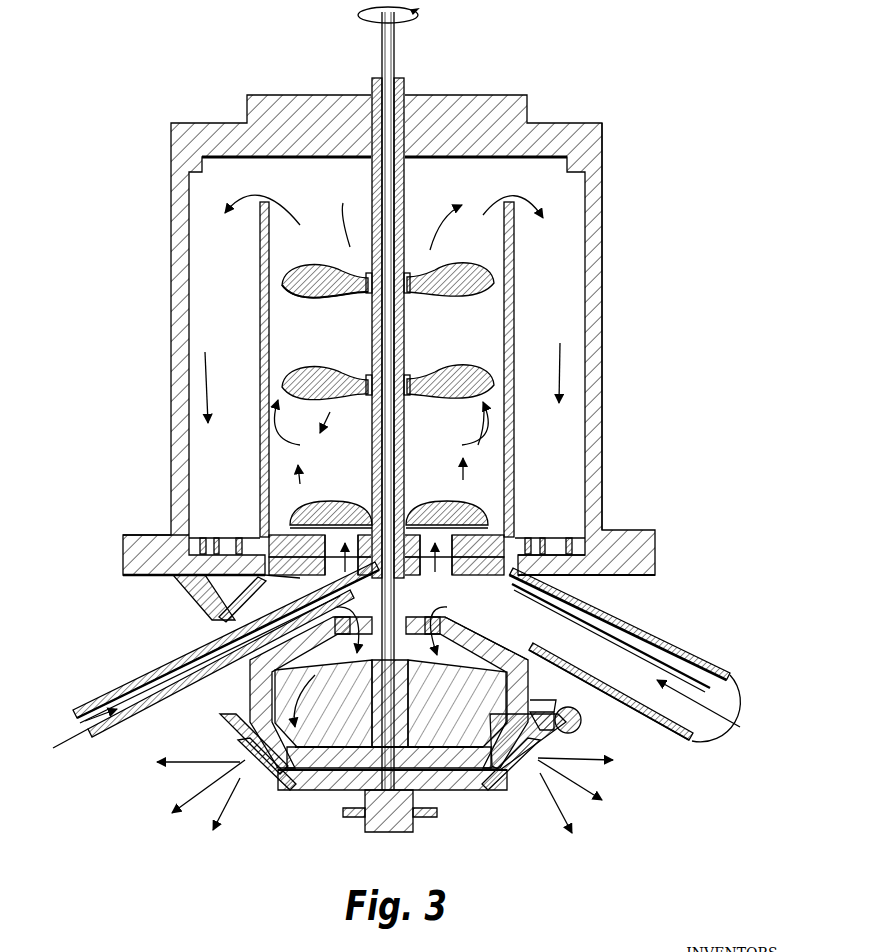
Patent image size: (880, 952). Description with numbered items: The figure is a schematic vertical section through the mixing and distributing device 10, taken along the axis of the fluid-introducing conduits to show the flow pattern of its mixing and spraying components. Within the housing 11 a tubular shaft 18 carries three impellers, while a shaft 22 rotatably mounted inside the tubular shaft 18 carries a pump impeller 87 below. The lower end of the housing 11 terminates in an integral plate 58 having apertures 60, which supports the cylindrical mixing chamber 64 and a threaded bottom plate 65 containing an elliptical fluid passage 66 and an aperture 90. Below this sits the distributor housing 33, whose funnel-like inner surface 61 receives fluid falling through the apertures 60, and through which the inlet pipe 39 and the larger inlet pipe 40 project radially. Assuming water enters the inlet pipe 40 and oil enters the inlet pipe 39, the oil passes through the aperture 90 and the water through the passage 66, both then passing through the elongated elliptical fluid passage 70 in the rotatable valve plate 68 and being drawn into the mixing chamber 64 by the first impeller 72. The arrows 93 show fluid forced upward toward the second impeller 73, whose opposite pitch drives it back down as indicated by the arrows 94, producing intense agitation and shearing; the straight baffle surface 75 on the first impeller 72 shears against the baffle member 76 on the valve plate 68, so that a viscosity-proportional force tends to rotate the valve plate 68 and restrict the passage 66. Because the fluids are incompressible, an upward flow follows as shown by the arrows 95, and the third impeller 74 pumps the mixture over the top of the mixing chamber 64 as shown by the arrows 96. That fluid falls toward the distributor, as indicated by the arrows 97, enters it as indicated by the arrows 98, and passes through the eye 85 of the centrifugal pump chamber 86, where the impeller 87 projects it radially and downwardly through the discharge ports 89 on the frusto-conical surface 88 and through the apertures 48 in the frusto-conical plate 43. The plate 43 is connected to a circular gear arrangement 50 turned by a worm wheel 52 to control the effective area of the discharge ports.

The mixing and distributing device 10 is at (606, 291).
The housing 11 is at (603, 328).
The tubular shaft 18 is at (406, 86).
The shaft 22 is at (397, 42).
The distributor housing 33 is at (196, 605).
The inlet pipe 39 is at (140, 718).
The inlet pipe 40 is at (640, 645).
The frusto-conical plate 43 is at (238, 739).
The apertures 48 is at (263, 770).
The circular gear arrangement 50 is at (541, 712).
The worm wheel 52 is at (583, 723).
The integral plate 58 is at (188, 527).
The apertures 60 is at (246, 572).
The frusto-conical surface 61 is at (228, 614).
The mixing chamber 64 is at (498, 273).
The bottom plate 65 is at (540, 570).
The elliptical fluid passage 66 is at (500, 563).
The valve plate 68 is at (275, 548).
The elongated elliptical fluid passage 70 is at (447, 545).
The first impeller 72 is at (443, 538).
The second impeller 73 is at (455, 378).
The third impeller 74 is at (480, 287).
The straight baffle surface 75 is at (312, 515).
The baffle member 76 is at (470, 535).
The eye 85 is at (450, 618).
The centrifugal pump chamber 86 is at (522, 652).
The impeller 87 is at (320, 720).
The frusto-conical surface 88 is at (300, 790).
The discharge ports 89 is at (278, 775).
The aperture 90 is at (287, 574).
The arrows 93 is at (313, 498).
The arrows 94 is at (326, 420).
The arrows 95 is at (282, 415).
The arrows 96 is at (343, 203).
The arrows 97 is at (207, 390).
The arrows 98 is at (247, 573).